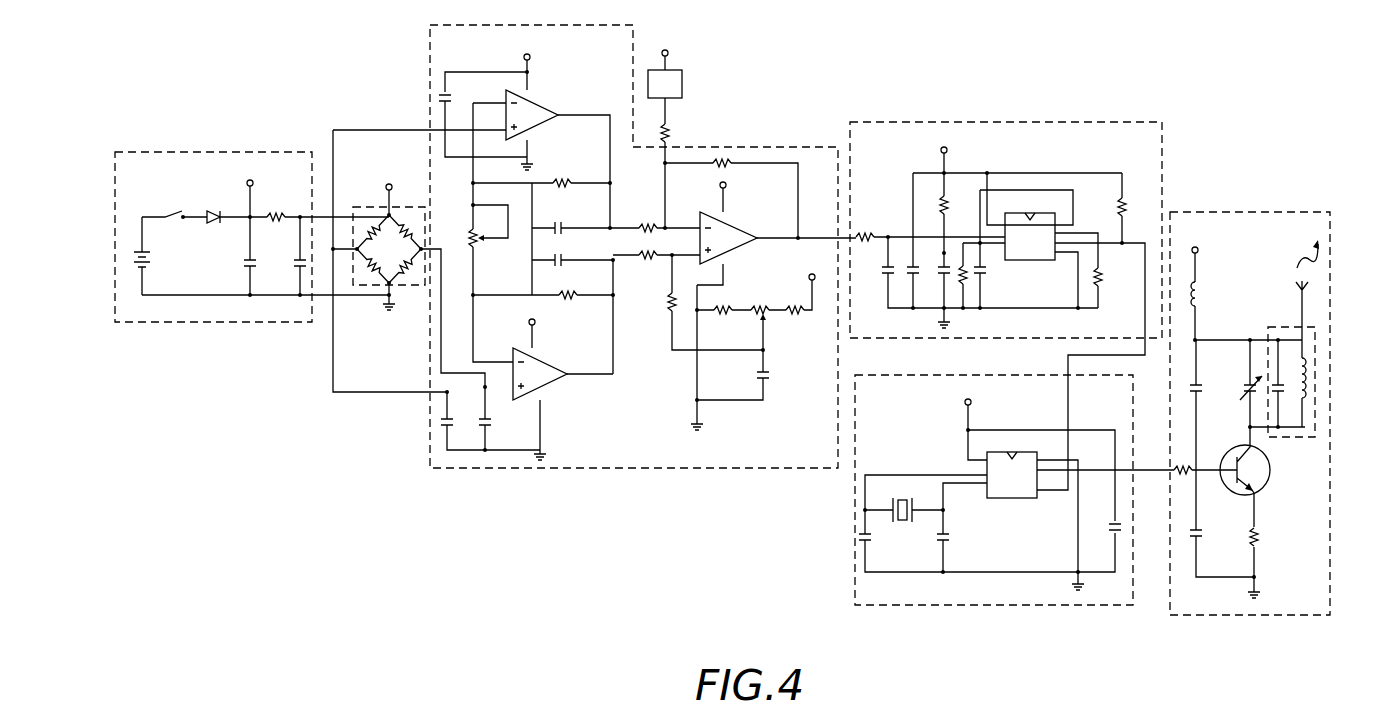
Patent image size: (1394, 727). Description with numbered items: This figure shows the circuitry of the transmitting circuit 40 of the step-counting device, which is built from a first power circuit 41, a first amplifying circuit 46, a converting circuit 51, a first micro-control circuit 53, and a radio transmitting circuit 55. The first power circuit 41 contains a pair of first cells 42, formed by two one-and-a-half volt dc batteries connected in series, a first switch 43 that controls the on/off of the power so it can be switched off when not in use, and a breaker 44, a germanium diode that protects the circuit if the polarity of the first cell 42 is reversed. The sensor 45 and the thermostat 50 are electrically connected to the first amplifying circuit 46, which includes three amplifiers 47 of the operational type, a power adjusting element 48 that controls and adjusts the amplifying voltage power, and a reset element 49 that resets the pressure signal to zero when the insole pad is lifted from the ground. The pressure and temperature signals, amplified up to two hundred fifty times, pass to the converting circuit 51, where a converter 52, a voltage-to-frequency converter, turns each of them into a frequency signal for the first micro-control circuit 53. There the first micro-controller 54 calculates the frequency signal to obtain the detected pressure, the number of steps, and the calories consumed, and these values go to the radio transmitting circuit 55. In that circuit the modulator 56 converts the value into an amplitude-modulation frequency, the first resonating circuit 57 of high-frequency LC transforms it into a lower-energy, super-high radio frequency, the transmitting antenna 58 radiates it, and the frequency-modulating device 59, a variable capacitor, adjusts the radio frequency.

The transmitting circuit 40 is at (974, 67).
The first power circuit 41 is at (184, 152).
The first cell 42 is at (135, 268).
The first switch 43 is at (165, 210).
The breaker 44 is at (223, 210).
The sensor 45 is at (360, 204).
The first amplifying circuit 46 is at (430, 28).
The amplifier 47 is at (546, 102).
The power adjusting element 48 is at (460, 258).
The reset element 49 is at (765, 288).
The thermostat 50 is at (678, 82).
The converting circuit 51 is at (1081, 135).
The converter 52 is at (1038, 205).
The first micro-control circuit 53 is at (1037, 595).
The first micro-controller 54 is at (1007, 503).
The radio transmitting circuit 55 is at (1248, 212).
The modulator 56 is at (1282, 463).
The first resonating circuit 57 is at (1316, 332).
The transmitting antenna 58 is at (1312, 288).
The frequency-modulating device 59 is at (1244, 401).